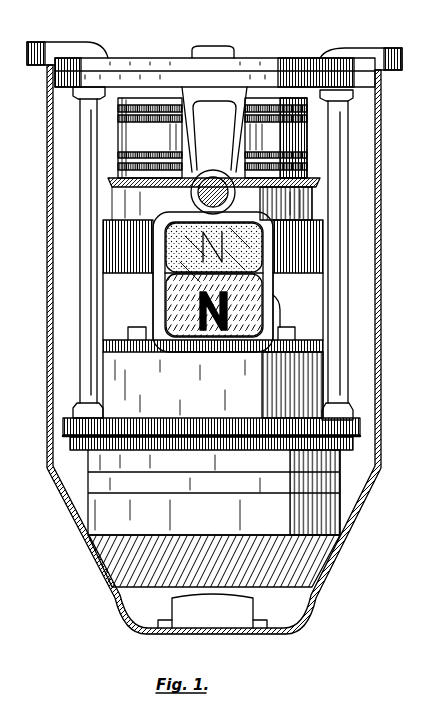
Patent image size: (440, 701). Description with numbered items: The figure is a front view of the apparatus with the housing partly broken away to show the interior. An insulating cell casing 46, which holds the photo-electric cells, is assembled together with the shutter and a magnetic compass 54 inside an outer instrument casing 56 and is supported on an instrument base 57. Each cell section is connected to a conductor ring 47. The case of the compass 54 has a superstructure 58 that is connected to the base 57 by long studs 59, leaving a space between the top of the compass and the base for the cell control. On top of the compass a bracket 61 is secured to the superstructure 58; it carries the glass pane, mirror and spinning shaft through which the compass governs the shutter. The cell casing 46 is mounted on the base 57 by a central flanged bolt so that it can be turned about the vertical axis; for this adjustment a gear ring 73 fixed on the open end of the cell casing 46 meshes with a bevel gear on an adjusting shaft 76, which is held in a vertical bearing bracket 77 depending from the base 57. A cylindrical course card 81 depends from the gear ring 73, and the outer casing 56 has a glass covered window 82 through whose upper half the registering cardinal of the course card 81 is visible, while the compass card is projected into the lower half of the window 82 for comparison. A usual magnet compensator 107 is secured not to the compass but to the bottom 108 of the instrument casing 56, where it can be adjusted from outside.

The cell casing 46 is at (157, 143).
The conductor ring 47 is at (174, 155).
The compass 54 is at (350, 503).
The instrument casing 56 is at (381, 185).
The instrument base 57 is at (283, 82).
The superstructure 58 is at (308, 398).
The long studs 59 is at (86, 328).
The bracket 61 is at (277, 314).
The gear ring 73 is at (322, 184).
The adjusting shaft 76 is at (199, 198).
The vertical bearing bracket 77 is at (224, 136).
The course card 81 is at (112, 246).
The window 82 is at (168, 290).
The magnet compensator 107 is at (250, 604).
The bottom 108 is at (238, 632).